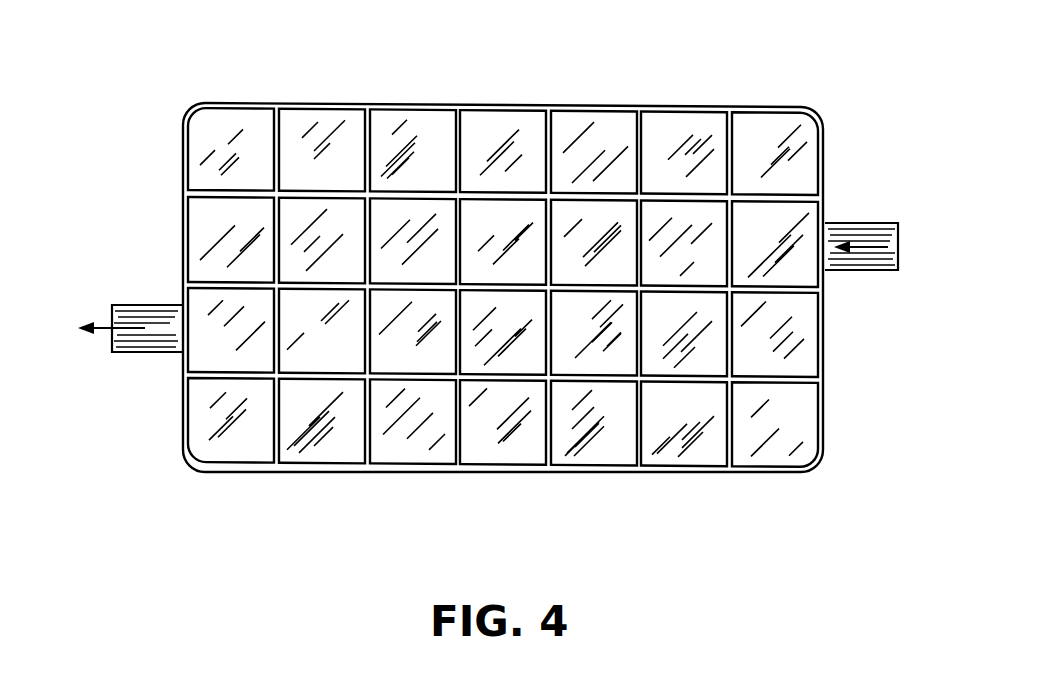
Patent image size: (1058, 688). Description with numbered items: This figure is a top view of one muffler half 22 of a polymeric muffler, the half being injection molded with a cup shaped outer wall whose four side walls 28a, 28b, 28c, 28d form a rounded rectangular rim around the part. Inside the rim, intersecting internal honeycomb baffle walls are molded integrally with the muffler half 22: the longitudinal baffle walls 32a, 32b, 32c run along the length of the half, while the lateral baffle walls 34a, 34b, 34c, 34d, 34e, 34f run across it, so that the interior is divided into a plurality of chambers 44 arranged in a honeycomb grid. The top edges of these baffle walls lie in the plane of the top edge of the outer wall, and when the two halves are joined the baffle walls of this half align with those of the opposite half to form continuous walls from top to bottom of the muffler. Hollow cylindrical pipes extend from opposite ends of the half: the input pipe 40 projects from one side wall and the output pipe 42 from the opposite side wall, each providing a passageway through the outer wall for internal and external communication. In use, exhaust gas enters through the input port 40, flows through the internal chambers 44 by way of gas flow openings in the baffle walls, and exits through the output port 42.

The muffler half 22 is at (208, 98).
The side wall 28a is at (505, 473).
The side wall 28b is at (826, 365).
The side wall 28c is at (410, 105).
The side wall 28d is at (184, 140).
The longitudinal honeycomb baffle wall 32a is at (197, 385).
The longitudinal honeycomb baffle wall 32b is at (200, 283).
The longitudinal honeycomb baffle wall 32c is at (205, 182).
The lateral honeycomb baffle wall 34a is at (206, 255).
The lateral honeycomb baffle wall 34b is at (356, 120).
The lateral honeycomb baffle wall 34c is at (448, 120).
The lateral honeycomb baffle wall 34d is at (536, 120).
The lateral honeycomb baffle wall 34e is at (633, 134).
The lateral honeycomb baffle wall 34f is at (726, 134).
The input pipe 40 is at (876, 223).
The output pipe 42 is at (118, 305).
The chambers 44 is at (470, 440).